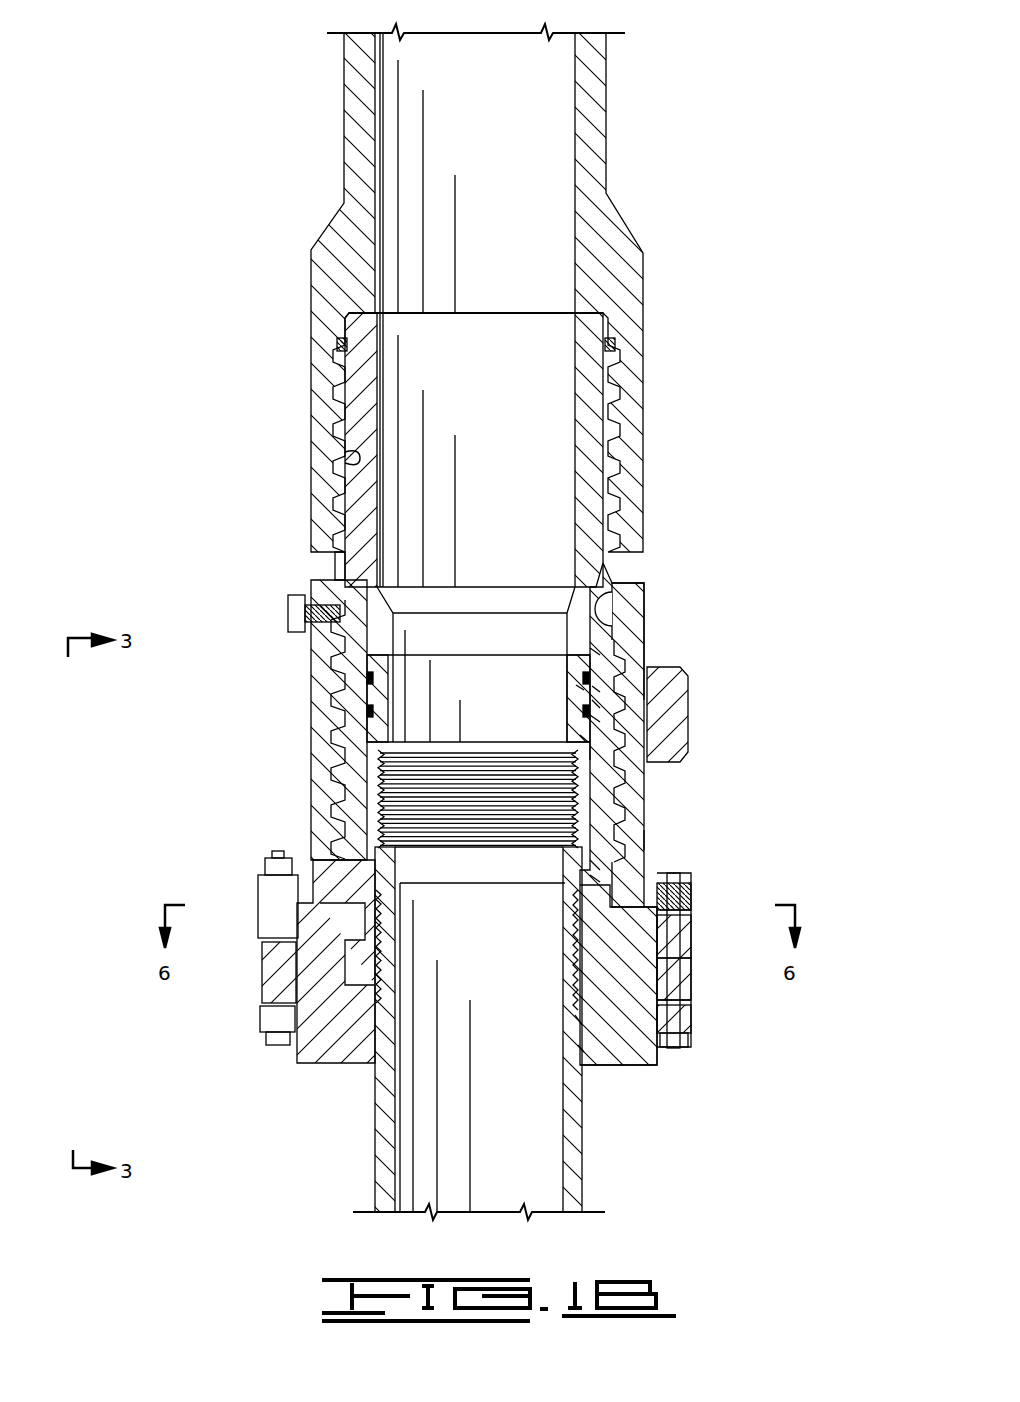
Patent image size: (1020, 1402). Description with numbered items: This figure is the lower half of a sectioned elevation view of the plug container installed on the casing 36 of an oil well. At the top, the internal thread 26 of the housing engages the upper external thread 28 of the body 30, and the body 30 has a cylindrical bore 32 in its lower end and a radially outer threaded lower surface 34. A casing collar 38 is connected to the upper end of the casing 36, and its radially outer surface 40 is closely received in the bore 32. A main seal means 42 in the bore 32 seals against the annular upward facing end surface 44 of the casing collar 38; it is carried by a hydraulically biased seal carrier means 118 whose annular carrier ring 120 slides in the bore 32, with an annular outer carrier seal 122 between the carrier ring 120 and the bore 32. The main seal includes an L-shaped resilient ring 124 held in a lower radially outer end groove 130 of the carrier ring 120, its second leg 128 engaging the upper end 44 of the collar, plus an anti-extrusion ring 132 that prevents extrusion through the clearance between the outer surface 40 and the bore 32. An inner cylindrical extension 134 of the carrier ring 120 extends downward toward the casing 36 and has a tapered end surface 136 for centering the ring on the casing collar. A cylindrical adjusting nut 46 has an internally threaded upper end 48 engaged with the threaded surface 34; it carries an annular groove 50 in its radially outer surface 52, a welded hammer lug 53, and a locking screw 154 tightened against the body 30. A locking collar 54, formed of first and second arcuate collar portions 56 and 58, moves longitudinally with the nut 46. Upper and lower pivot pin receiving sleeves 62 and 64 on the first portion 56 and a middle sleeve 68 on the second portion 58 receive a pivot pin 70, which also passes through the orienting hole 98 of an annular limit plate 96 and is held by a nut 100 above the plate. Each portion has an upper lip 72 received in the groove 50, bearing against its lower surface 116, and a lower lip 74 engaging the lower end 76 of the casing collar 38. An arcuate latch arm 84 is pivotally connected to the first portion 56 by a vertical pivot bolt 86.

The internal thread 26 is at (352, 463).
The upper external thread 28 is at (630, 432).
The body 30 is at (600, 372).
The cylindrical bore 32 is at (630, 640).
The radially outer threaded lower surface 34 is at (615, 803).
The casing 36 is at (575, 1170).
The casing collar 38 is at (600, 865).
The radially outer surface 40 is at (372, 735).
The main seal means 42 is at (606, 705).
The annular upward facing end surface 44 is at (372, 718).
The cylindrical adjusting nut 46 is at (635, 608).
The internally threaded upper end 48 is at (615, 598).
The annular groove 50 is at (605, 880).
The radially outer surface 52 is at (620, 838).
The hammer lug 53 is at (680, 703).
The locking collar 54 is at (745, 985).
The first arcuate collar portion 56 is at (330, 1045).
The second arcuate collar portion 58 is at (640, 1050).
The upper pivot pin receiving sleeve 62 is at (691, 933).
The lower pivot pin receiving sleeve 64 is at (691, 1023).
The middle pivot pin receiving sleeve 68 is at (691, 990).
The pivot pin 70 is at (690, 888).
The upper radially inward extending lip 72 is at (572, 912).
The lower radially inward extending lip 74 is at (580, 1050).
The lower end 76 is at (577, 1022).
The arcuate latch arm 84 is at (275, 975).
The pivot bolt 86 is at (278, 850).
The limit plate 96 is at (692, 915).
The orienting hole 98 is at (691, 965).
The nut 100 is at (692, 905).
The lower surface 116 is at (572, 945).
The hydraulically biased seal carrier means 118 is at (600, 690).
The annular carrier ring 120 is at (575, 673).
The annular outer carrier seal 122 is at (600, 650).
The L-shaped cross-section annular resilient ring 124 is at (580, 705).
The second leg 128 is at (585, 740).
The lower radially outer end groove 130 is at (582, 687).
The anti-extrusion ring 132 is at (600, 720).
The inner cylindrical extension 134 is at (600, 770).
The tapered radially outer end surface 136 is at (595, 745).
The locking screw 154 is at (292, 612).